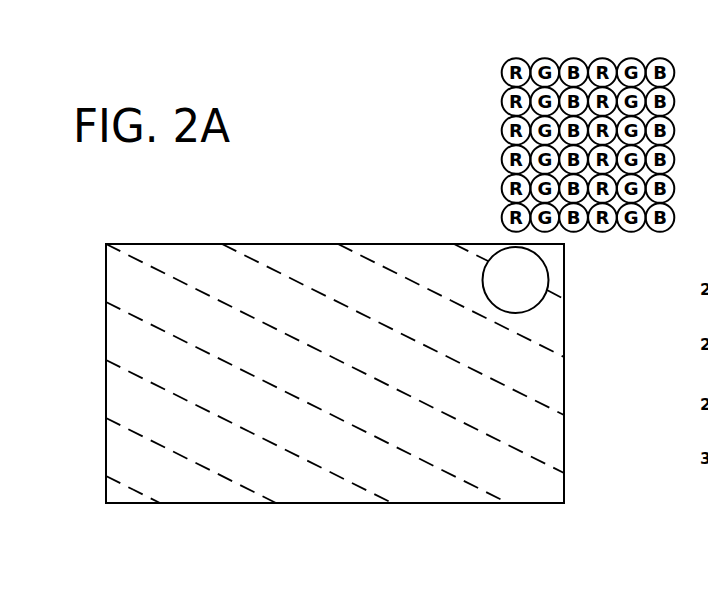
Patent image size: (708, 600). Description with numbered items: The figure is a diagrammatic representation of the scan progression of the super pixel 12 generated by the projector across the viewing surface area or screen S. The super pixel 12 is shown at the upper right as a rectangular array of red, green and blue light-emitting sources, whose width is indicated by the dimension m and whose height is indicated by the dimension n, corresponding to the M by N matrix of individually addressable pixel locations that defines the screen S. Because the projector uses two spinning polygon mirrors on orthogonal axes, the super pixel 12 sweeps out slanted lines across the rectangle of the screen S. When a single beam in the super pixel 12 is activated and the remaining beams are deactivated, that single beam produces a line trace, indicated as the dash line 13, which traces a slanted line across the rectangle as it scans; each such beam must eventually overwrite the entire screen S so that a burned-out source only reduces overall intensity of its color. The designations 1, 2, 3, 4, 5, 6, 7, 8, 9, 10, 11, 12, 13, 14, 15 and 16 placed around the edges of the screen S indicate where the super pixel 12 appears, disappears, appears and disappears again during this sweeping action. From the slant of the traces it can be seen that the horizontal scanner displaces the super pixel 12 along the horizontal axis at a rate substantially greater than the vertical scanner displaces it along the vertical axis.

The scan appearance/disappearance designation 1 is at (466, 244).
The scan appearance/disappearance designation 2 is at (562, 302).
The scan appearance/disappearance designation 3 is at (390, 264).
The scan appearance/disappearance designation 4 is at (514, 334).
The scan appearance/disappearance designation 5 is at (302, 279).
The scan appearance/disappearance designation 6 is at (485, 377).
The scan appearance/disappearance designation 7 is at (217, 293).
The scan appearance/disappearance designation 8 is at (456, 421).
The scan appearance/disappearance designation 9 is at (199, 349).
The scan appearance/disappearance designation 10 is at (420, 463).
The scan appearance/disappearance designation 11 is at (166, 391).
The super pixel 12 is at (444, 113).
The dash line 13 is at (580, 200).
The scan appearance/disappearance designation 14 is at (233, 493).
The scan appearance/disappearance designation 15 is at (106, 478).
The scan appearance/disappearance designation 16 is at (158, 507).
The viewing surface area or screen S is at (170, 244).
The matrix width dimension m is at (503, 43).
The matrix height dimension n is at (668, 58).